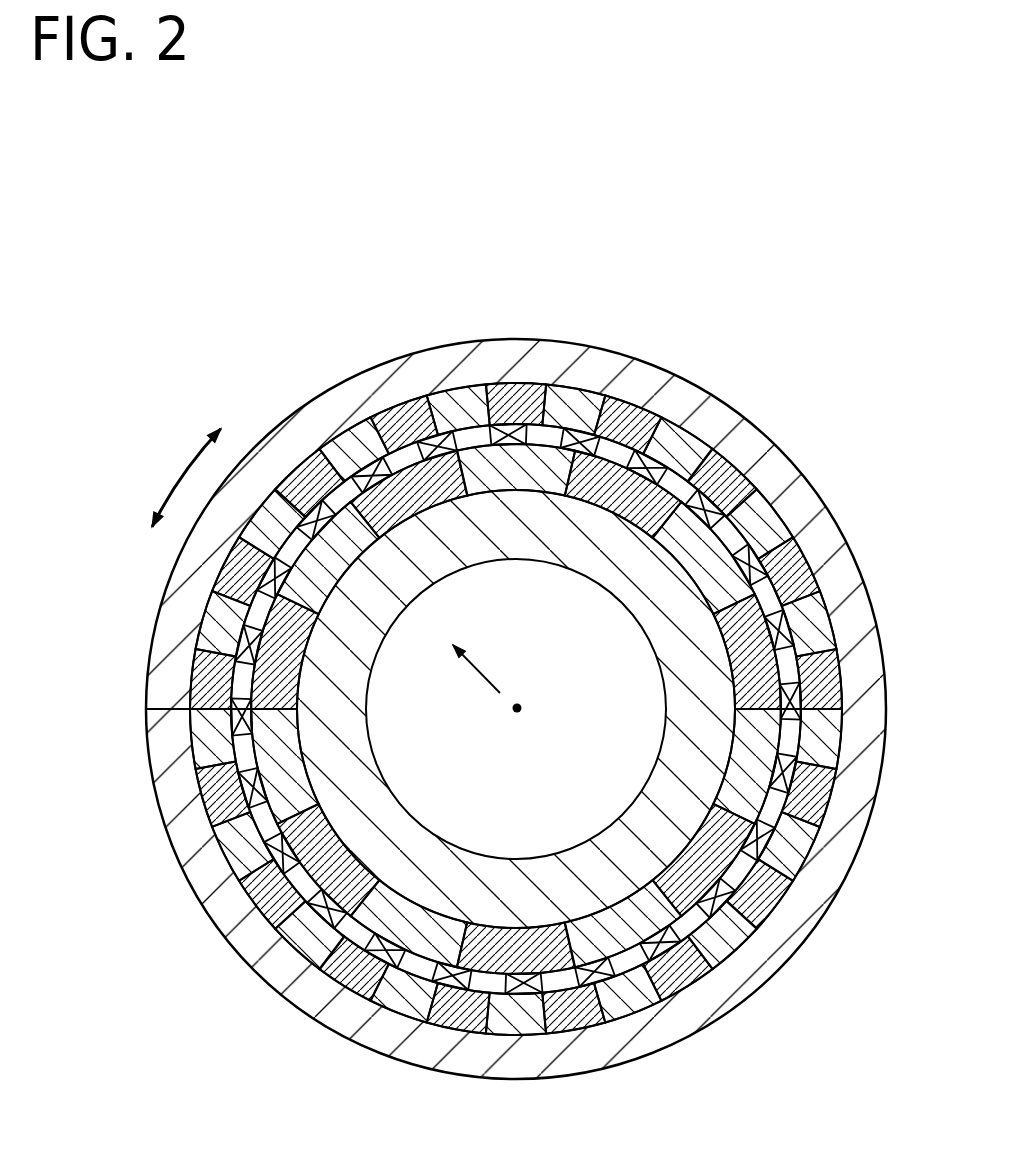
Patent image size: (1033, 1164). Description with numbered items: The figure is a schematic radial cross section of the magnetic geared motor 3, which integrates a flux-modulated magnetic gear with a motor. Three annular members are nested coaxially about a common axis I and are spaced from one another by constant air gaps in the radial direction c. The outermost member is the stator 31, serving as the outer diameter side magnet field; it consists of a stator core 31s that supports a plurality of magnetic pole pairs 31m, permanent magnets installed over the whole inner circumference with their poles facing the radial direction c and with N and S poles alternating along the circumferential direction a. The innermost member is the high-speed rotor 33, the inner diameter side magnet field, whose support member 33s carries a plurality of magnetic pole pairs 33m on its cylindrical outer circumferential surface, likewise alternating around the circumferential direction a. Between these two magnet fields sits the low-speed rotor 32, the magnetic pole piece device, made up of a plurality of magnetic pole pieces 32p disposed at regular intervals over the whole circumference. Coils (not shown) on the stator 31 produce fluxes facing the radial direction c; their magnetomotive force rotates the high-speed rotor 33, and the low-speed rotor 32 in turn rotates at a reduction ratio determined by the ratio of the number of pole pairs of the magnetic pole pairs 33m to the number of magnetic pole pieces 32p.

The magnetic geared motor 3 is at (448, 644).
The stator 31 is at (516, 659).
The stator core 31s is at (293, 443).
The magnetic pole pairs 31m is at (512, 400).
The low-speed rotor 32 is at (559, 696).
The magnetic pole pieces 32p is at (702, 508).
The high-speed rotor 33 is at (407, 709).
The support member 33s is at (333, 723).
The magnetic pole pairs 33m is at (313, 853).
The circumferential direction a is at (183, 470).
The radial direction c is at (476, 669).
The axis I is at (522, 708).